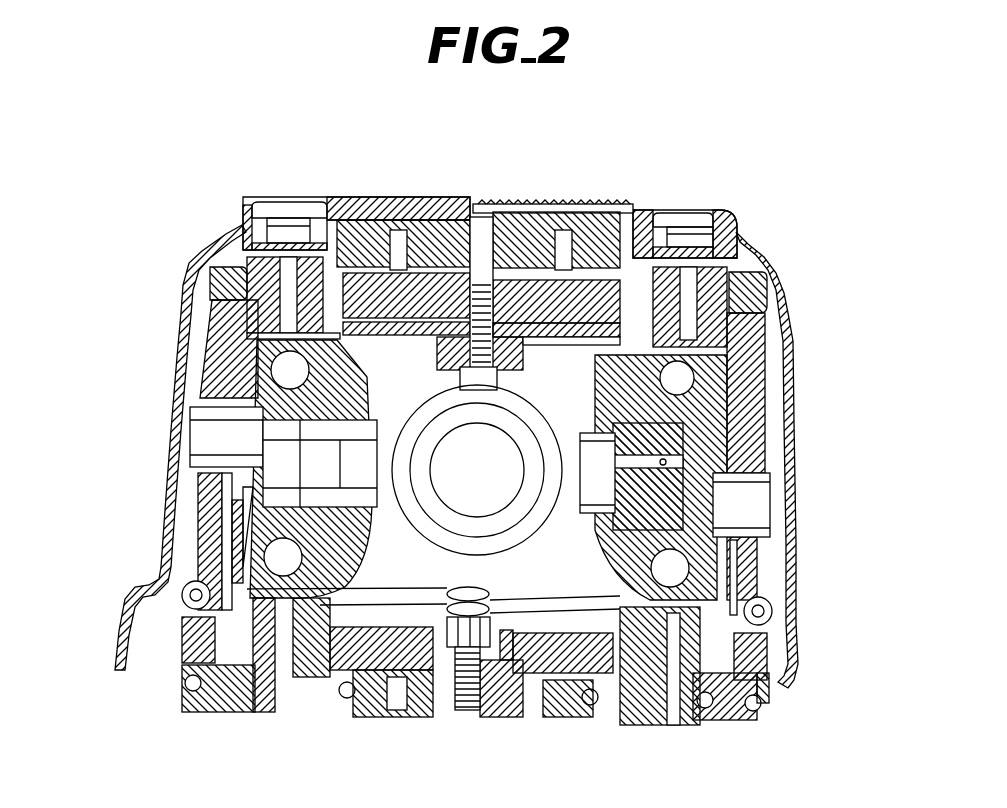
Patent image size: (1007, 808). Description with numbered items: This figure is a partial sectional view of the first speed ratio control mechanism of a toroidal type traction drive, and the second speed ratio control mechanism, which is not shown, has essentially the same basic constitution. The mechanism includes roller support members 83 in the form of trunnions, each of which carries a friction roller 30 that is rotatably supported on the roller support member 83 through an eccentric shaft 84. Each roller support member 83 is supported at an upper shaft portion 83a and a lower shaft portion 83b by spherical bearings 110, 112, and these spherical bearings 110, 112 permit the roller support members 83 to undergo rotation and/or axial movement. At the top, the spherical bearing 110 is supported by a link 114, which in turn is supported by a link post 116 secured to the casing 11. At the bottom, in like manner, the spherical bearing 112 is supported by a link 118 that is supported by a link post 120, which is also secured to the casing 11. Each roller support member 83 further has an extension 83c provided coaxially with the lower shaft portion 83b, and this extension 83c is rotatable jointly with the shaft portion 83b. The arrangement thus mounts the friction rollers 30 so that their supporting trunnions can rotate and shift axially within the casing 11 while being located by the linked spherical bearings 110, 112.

The casing 11 is at (793, 503).
The friction roller 30 is at (363, 347).
The roller support member 83 is at (201, 349).
The upper shaft portion 83a is at (258, 232).
The lower shaft portion 83b is at (181, 623).
The extension 83c is at (766, 665).
The eccentric shaft 84 is at (368, 490).
The spherical bearing 110 is at (222, 290).
The spherical bearing 112 is at (181, 647).
The link 114 is at (567, 325).
The link post 116 is at (413, 333).
The link 118 is at (543, 638).
The link post 120 is at (427, 605).